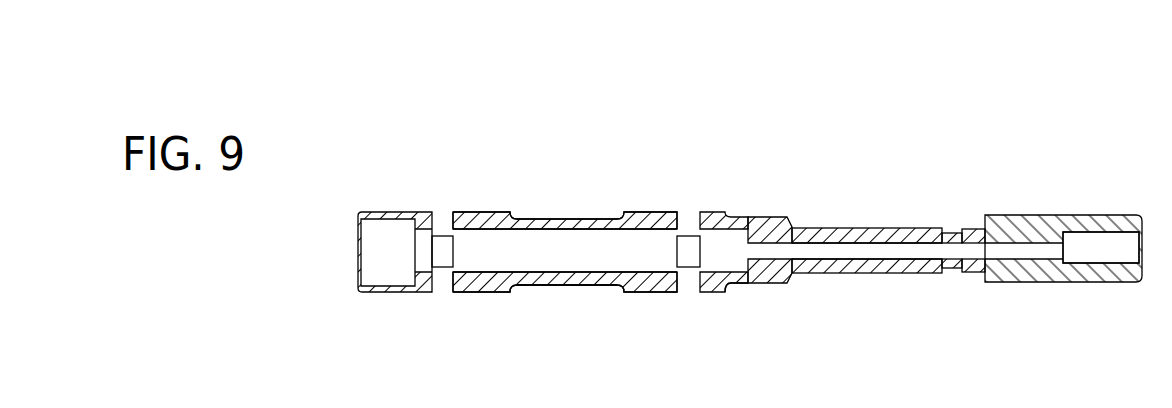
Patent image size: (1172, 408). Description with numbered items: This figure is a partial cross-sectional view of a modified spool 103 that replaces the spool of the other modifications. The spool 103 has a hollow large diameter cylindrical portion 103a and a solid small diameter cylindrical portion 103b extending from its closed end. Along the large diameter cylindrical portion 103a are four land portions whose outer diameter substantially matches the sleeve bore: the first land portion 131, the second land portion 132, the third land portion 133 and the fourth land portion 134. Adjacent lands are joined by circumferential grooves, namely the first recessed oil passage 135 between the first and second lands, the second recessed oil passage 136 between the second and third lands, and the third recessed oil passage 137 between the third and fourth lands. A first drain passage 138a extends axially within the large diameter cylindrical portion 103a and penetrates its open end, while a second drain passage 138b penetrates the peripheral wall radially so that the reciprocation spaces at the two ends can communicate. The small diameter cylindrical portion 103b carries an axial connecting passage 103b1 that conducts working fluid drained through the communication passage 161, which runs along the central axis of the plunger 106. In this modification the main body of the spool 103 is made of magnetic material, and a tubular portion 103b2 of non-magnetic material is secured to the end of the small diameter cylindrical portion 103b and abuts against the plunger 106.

The first land portion 131 is at (398, 212).
The first recessed oil passage 135 is at (440, 224).
The spool 103 is at (483, 218).
The second land portion 132 is at (497, 217).
The second recessed oil passage 136 is at (568, 216).
The third land portion 133 is at (638, 215).
The hollow large diameter cylindrical portion 103a is at (655, 222).
The third recessed oil passage 137 is at (690, 222).
The fourth land portion 134 is at (715, 220).
The first drain passage 138a is at (562, 287).
The second drain passage 138b is at (733, 285).
The solid small diameter cylindrical portion 103b is at (890, 230).
The axial connecting passage 103b1 is at (860, 252).
The tubular portion 103b2 is at (975, 270).
The plunger 106 is at (1043, 215).
The communication passage 161 is at (1043, 254).